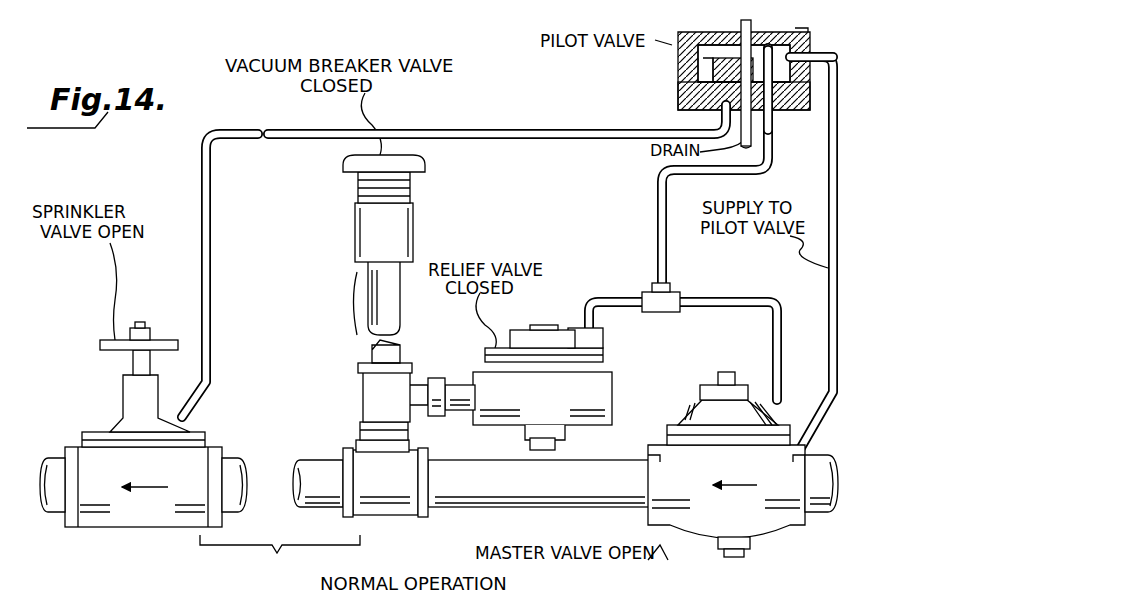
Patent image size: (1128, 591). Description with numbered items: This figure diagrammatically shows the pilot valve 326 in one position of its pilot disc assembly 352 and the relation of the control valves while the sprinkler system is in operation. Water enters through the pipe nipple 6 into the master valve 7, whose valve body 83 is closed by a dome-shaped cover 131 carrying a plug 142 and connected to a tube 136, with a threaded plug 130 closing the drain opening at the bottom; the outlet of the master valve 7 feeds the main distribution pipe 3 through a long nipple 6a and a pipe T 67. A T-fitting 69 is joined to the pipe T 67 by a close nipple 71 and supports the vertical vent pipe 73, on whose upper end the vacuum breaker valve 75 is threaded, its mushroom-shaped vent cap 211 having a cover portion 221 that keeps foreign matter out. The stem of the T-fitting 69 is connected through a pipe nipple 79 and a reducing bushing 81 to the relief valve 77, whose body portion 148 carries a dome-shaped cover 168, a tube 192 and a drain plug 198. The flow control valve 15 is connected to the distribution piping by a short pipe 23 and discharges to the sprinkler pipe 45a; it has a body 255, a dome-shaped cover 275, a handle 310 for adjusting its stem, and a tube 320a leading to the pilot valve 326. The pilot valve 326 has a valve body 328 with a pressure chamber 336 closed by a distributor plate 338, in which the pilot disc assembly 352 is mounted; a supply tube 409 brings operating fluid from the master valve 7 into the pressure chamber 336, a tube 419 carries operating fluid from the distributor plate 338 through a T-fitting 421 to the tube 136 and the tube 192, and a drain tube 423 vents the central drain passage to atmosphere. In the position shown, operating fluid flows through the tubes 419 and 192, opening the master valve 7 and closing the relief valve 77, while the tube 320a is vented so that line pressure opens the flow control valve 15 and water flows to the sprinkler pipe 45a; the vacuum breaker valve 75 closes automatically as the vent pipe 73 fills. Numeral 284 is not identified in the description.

The main distribution pipe 3 is at (318, 480).
The pipe nipple 6 is at (818, 470).
The long nipple 6a is at (478, 508).
The master valve 7 is at (660, 440).
The flow control valve 15 is at (98, 432).
The short pipe 23 is at (230, 462).
The sprinkler pipe 45a is at (58, 458).
The pipe T 67 is at (360, 467).
The T-fitting 69 is at (370, 388).
The close nipple 71 is at (360, 425).
The vent pipe 73 is at (400, 318).
The vacuum breaker valve 75 is at (355, 208).
The relief valve 77 is at (480, 360).
The pipe nipple 79 is at (460, 388).
The reducing bushing 81 is at (436, 416).
The valve body 83 is at (775, 518).
The threaded plug 130 is at (736, 550).
The dome-shaped cover 131 is at (708, 405).
The tube 136 is at (710, 297).
The plug 142 is at (730, 372).
The body portion 148 is at (593, 420).
The dome-shaped cover 168 is at (548, 340).
The tube 192 is at (630, 297).
The drain plug 198 is at (530, 445).
The vent cap 211 is at (342, 164).
The cover portion 221 is at (425, 162).
The body 255 is at (105, 520).
The dome-shaped cover 275 is at (122, 398).
The element 284 is at (764, 585).
The handle 310 is at (108, 340).
The tube 320a is at (272, 131).
The pilot valve 326 is at (678, 64).
The valve body 328 is at (808, 34).
The pressure chamber 336 is at (773, 105).
The distributor plate 338 is at (678, 100).
The pilot disc assembly 352 is at (713, 70).
The supply tube 409 is at (828, 292).
The tube 419 is at (657, 190).
The T-fitting 421 is at (668, 312).
The drain tube 423 is at (752, 138).